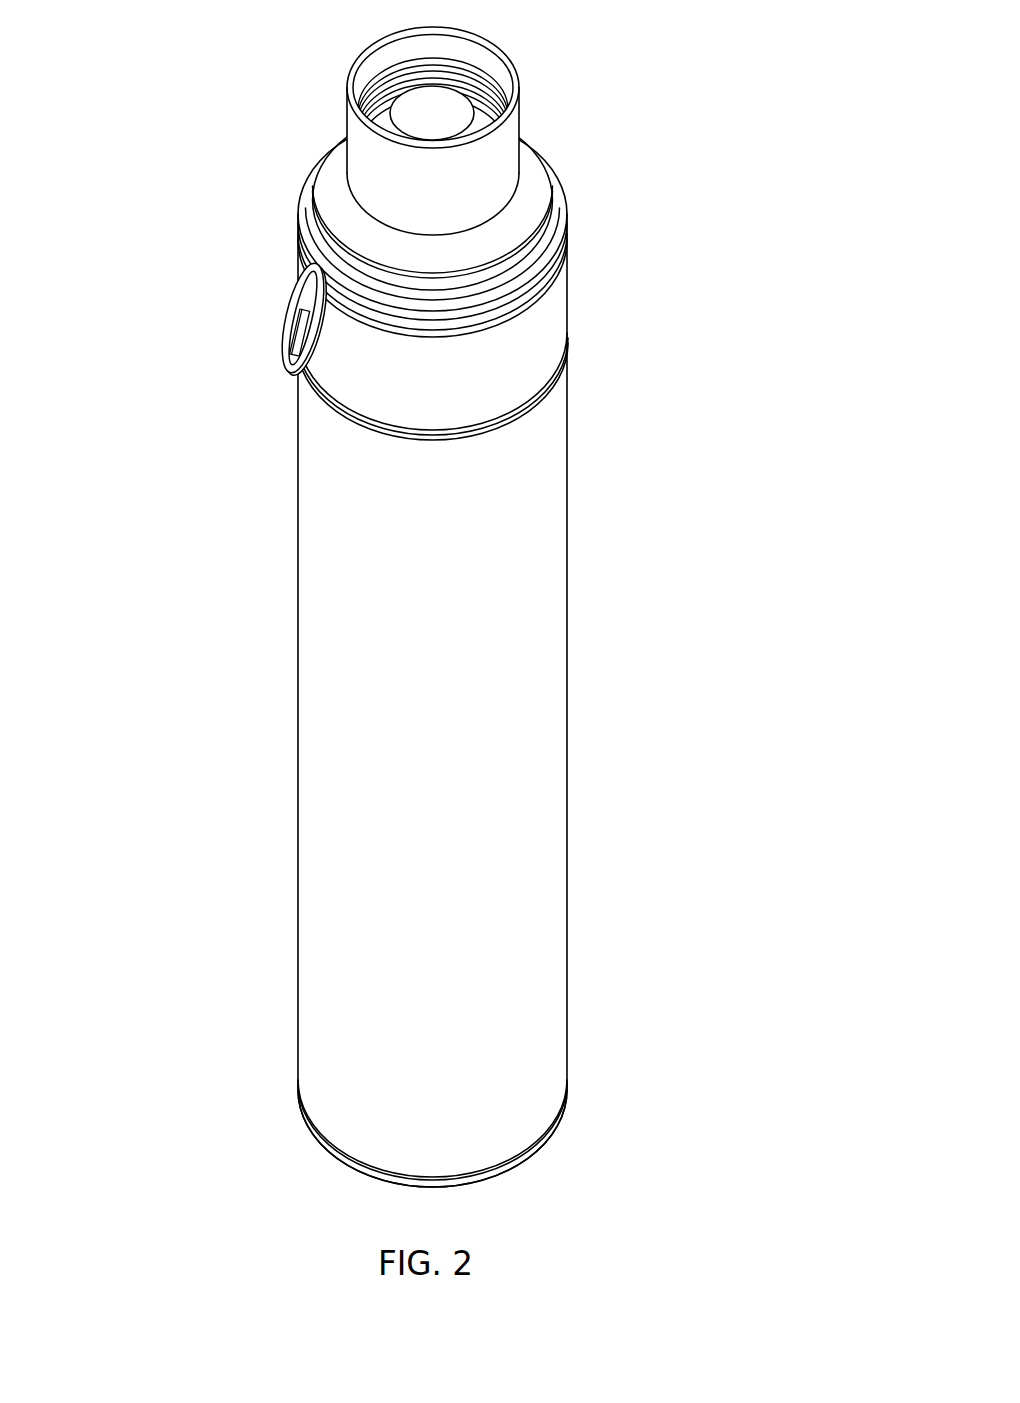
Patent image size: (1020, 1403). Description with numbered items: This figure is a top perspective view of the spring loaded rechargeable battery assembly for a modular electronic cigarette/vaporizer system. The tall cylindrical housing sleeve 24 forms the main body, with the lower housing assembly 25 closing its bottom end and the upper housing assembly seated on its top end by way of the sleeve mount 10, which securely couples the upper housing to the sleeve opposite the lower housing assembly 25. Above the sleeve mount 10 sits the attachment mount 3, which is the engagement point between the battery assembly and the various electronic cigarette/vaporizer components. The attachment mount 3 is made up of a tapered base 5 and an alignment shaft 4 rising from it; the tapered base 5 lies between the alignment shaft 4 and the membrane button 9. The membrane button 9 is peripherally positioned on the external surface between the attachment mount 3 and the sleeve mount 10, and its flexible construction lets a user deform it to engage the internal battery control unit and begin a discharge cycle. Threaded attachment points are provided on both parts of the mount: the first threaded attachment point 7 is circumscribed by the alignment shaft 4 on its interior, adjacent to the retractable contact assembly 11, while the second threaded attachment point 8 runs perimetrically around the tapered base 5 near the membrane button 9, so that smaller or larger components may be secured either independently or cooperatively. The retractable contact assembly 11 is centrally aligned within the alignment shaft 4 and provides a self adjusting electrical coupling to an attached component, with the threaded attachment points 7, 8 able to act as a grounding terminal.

The attachment mount 3 is at (577, 169).
The alignment shaft 4 is at (449, 190).
The tapered base 5 is at (307, 177).
The first threaded attachment point 7 is at (387, 80).
The second threaded attachment point 8 is at (550, 225).
The membrane button 9 is at (286, 325).
The sleeve mount 10 is at (533, 408).
The retractable contact assembly 11 is at (455, 90).
The housing sleeve 24 is at (448, 794).
The lower housing assembly 25 is at (306, 1140).